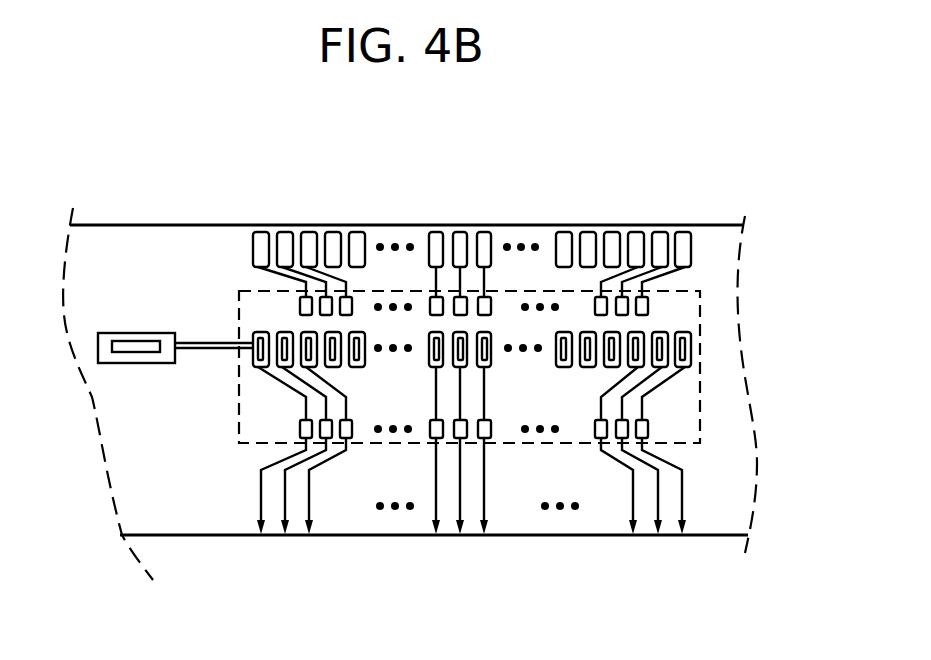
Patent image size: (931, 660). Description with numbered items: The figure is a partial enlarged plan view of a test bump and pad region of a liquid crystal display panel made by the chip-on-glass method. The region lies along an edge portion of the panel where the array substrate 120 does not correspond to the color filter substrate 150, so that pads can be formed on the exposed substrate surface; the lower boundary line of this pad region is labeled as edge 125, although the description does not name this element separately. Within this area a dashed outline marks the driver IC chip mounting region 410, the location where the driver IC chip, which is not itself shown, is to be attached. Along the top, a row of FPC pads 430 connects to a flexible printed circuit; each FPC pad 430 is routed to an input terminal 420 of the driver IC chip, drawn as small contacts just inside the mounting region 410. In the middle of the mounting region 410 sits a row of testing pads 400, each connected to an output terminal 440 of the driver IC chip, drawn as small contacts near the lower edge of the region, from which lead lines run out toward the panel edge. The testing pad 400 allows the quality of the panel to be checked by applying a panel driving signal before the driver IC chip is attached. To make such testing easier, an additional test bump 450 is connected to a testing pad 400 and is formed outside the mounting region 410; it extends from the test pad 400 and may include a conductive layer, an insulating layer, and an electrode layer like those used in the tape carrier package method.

The array substrate 120 is at (648, 225).
The lower edge of base film 125 is at (200, 508).
The color filter substrate 150 is at (705, 537).
The testing pad 400 is at (692, 357).
The driver IC chip mounting region 410 is at (700, 325).
The input terminal 420 is at (650, 302).
The FPC pad 430 is at (689, 247).
The output terminal 440 is at (649, 431).
The test bump 450 is at (130, 366).